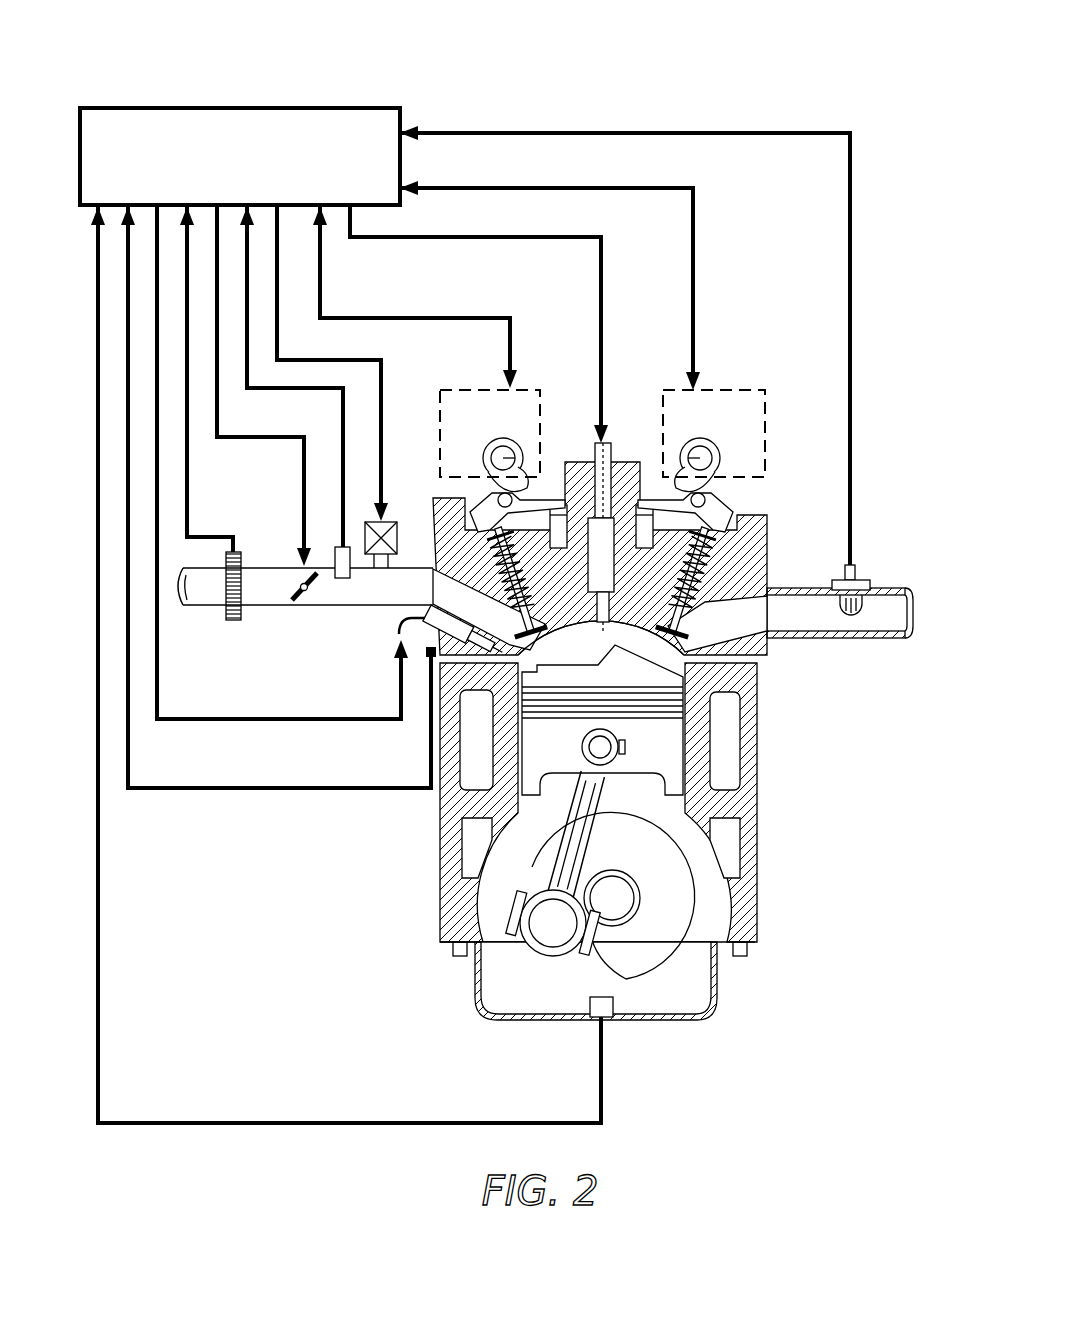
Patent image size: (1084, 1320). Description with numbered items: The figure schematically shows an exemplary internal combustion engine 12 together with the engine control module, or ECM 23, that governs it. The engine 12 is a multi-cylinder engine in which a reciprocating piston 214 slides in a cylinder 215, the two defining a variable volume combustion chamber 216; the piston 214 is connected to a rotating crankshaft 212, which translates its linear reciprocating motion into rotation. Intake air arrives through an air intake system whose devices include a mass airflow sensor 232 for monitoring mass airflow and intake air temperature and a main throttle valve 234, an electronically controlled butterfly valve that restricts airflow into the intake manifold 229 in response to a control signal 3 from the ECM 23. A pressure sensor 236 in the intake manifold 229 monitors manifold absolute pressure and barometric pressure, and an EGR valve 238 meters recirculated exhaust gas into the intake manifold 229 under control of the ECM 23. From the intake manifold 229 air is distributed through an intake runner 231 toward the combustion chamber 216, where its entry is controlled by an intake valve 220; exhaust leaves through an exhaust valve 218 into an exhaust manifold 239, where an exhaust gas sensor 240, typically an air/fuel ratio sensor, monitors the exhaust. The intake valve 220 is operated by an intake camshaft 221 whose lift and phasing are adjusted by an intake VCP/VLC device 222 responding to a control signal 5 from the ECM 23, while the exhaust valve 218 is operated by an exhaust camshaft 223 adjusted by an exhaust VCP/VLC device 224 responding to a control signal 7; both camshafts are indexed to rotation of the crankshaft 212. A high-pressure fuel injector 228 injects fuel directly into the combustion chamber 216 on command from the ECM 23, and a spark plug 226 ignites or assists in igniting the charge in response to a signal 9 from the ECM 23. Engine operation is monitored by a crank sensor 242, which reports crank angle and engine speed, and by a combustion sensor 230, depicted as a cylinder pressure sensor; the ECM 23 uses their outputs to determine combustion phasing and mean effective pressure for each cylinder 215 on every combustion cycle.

The ECM 23 is at (360, 105).
The control signal 3 is at (275, 432).
The control signal 5 is at (462, 312).
The control signal 7 is at (664, 184).
The signal 9 is at (560, 234).
The internal combustion engine 12 is at (762, 802).
The crankshaft 212 is at (673, 967).
The piston 214 is at (634, 759).
The cylinder 215 is at (692, 678).
The combustion chamber 216 is at (548, 668).
The exhaust valve 218 is at (688, 630).
The intake valve 220 is at (508, 613).
The intake camshaft 221 is at (518, 448).
The intake VCP/VLC device 222 is at (525, 392).
The exhaust camshaft 223 is at (718, 448).
The exhaust VCP/VLC device 224 is at (770, 455).
The spark plug 226 is at (618, 440).
The fuel injector 228 is at (399, 690).
The intake manifold 229 is at (418, 560).
The combustion sensor 230 is at (429, 665).
The intake runner 231 is at (438, 575).
The mass airflow sensor 232 is at (233, 622).
The main throttle valve 234 is at (292, 602).
The pressure sensor 236 is at (316, 578).
The EGR valve 238 is at (343, 581).
The exhaust manifold 239 is at (783, 590).
The exhaust gas sensor 240 is at (857, 578).
The crank sensor 242 is at (592, 1010).